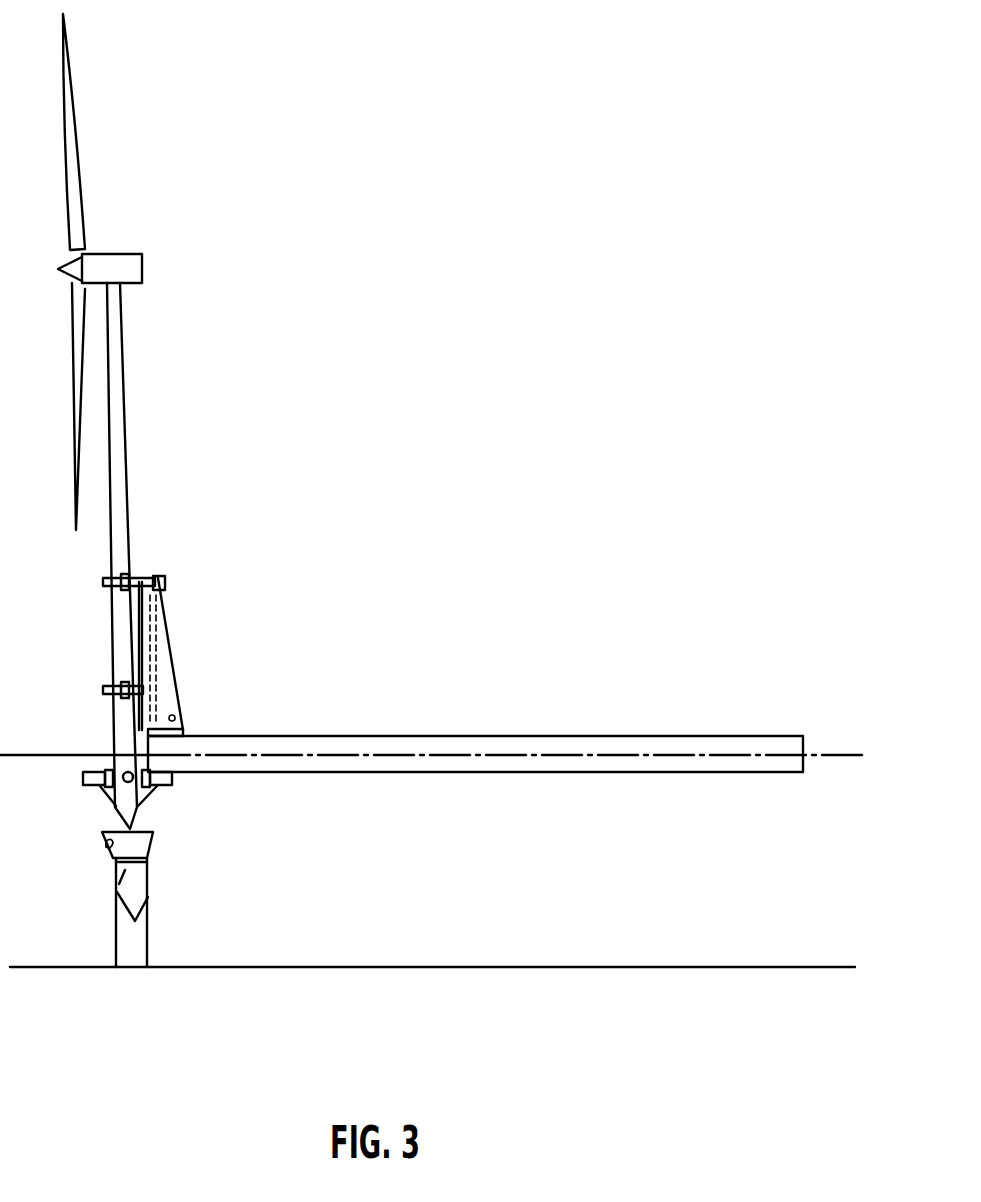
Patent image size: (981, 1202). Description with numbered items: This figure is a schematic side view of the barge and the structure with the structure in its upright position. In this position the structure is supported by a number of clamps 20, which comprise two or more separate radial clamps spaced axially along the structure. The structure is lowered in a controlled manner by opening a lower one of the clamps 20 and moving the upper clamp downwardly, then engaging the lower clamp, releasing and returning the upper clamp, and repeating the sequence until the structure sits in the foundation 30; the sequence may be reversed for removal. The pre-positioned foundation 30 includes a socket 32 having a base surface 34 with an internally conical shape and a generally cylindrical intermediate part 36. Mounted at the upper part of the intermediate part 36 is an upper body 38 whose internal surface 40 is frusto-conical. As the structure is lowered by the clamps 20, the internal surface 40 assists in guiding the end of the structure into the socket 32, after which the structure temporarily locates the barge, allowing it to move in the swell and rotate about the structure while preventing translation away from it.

The clamps 20 is at (102, 583).
The foundation 30 is at (150, 952).
The socket 32 is at (122, 879).
The base surface 34 is at (150, 913).
The intermediate part 36 is at (150, 877).
The upper body 38 is at (153, 847).
The internal surface 40 is at (107, 850).